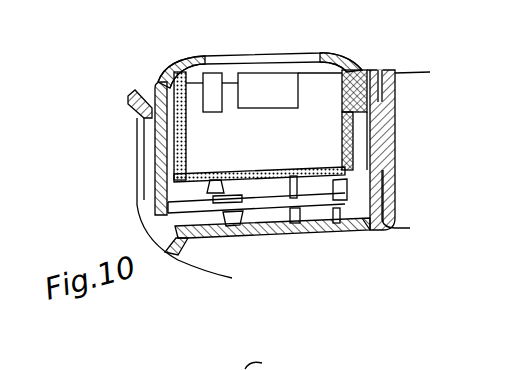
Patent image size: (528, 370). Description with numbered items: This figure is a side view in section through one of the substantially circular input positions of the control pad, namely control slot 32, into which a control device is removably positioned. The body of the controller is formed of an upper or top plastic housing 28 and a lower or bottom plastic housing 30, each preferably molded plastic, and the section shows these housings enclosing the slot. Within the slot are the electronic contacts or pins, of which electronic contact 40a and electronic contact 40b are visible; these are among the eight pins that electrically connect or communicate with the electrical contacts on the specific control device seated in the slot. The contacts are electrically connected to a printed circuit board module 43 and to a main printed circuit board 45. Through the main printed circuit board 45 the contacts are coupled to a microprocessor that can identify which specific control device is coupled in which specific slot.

The top plastic housing 28 is at (397, 105).
The bottom plastic housing 30 is at (390, 150).
The control slot 32 is at (358, 60).
The printed circuit board module 43 is at (393, 191).
The electronic contact 40a is at (226, 222).
The electronic contact 40b is at (382, 222).
The main printed circuit board 45 is at (333, 212).